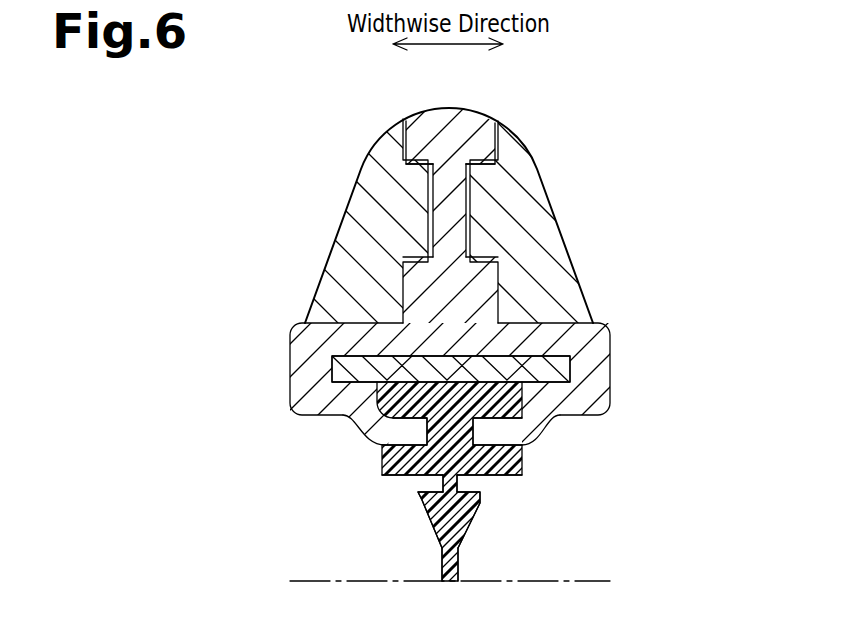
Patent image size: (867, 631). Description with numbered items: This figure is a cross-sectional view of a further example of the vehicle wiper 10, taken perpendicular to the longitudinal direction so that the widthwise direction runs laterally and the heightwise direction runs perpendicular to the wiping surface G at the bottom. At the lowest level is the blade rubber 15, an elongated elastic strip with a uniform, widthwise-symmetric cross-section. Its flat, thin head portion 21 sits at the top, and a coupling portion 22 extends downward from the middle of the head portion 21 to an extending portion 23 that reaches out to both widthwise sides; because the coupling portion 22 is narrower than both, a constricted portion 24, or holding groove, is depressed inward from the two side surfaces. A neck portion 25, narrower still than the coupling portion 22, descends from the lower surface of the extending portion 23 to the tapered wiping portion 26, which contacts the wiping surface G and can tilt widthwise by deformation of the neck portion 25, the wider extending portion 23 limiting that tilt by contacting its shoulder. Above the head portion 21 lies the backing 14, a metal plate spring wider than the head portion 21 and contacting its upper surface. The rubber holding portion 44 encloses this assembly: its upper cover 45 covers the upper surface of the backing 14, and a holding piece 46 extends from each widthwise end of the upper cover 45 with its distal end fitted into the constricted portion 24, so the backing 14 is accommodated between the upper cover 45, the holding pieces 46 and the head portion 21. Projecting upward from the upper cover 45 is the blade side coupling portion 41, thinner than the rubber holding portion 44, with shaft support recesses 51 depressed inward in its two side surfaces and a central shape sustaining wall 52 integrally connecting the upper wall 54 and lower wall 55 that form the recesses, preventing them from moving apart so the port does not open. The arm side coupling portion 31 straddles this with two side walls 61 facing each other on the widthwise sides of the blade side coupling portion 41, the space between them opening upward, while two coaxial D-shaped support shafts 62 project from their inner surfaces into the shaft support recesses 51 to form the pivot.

The vehicle wiper 10 is at (641, 93).
The arm side coupling portion 31 is at (572, 139).
The side wall 61 is at (358, 190).
The support shaft 62 is at (427, 238).
The shaft support recess 51 is at (402, 165).
The blade side coupling portion 41 is at (483, 122).
The upper wall 54 is at (447, 115).
The shape sustaining wall 52 is at (428, 220).
The lower wall 55 is at (440, 287).
The rubber holding portion 44 is at (290, 352).
The upper cover 45 is at (547, 325).
The holding piece 46 is at (607, 412).
The backing 14 is at (557, 370).
The coupling portion 22 is at (508, 466).
The constricted portion 24 is at (375, 443).
The head portion 21 is at (513, 407).
The extending portion 23 is at (507, 475).
The neck portion 25 is at (447, 478).
The blade rubber 15 is at (515, 562).
The wiping portion 26 is at (447, 527).
The wiping surface G is at (600, 581).